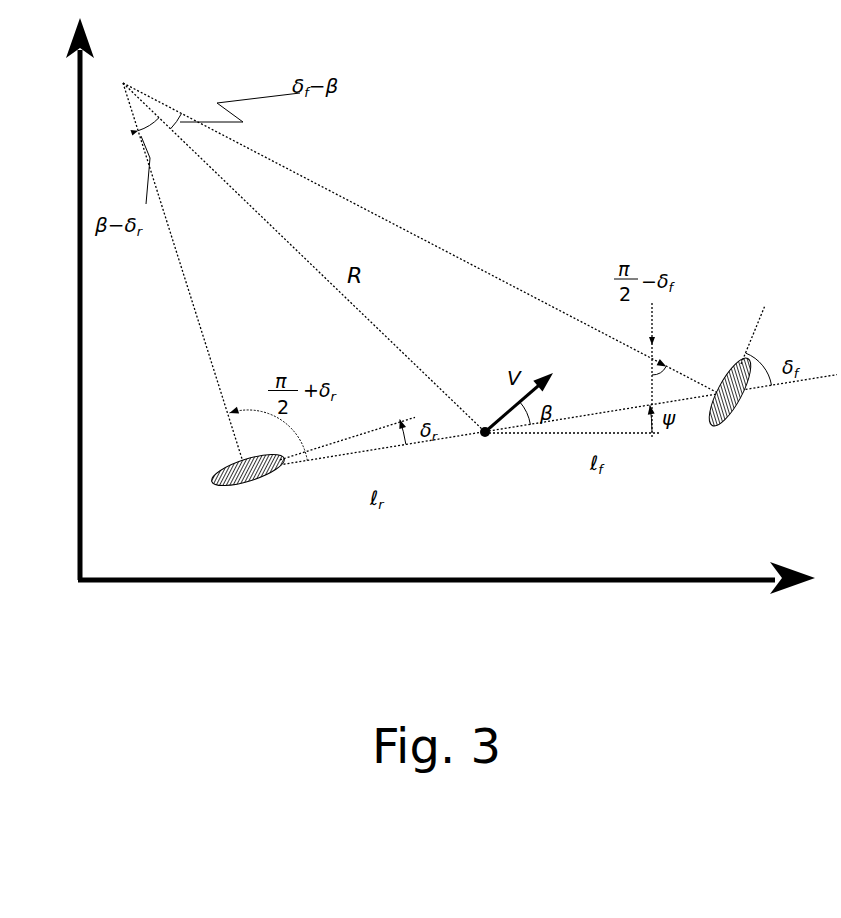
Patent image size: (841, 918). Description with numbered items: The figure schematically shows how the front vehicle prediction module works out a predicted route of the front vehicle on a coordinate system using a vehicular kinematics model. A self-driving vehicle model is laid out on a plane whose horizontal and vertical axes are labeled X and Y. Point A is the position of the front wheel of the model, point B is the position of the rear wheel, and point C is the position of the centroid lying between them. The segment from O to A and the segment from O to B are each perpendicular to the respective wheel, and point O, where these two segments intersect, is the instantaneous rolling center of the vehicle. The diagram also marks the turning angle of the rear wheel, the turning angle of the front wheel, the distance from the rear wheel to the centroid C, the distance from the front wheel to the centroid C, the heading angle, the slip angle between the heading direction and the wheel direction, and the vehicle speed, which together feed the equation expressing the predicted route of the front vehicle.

The instantaneous rolling center O is at (419, 258).
The front wheel position A is at (733, 369).
The rear wheel position B is at (311, 464).
The centroid position C is at (570, 420).
The X axis X is at (446, 587).
The Y axis Y is at (66, 299).